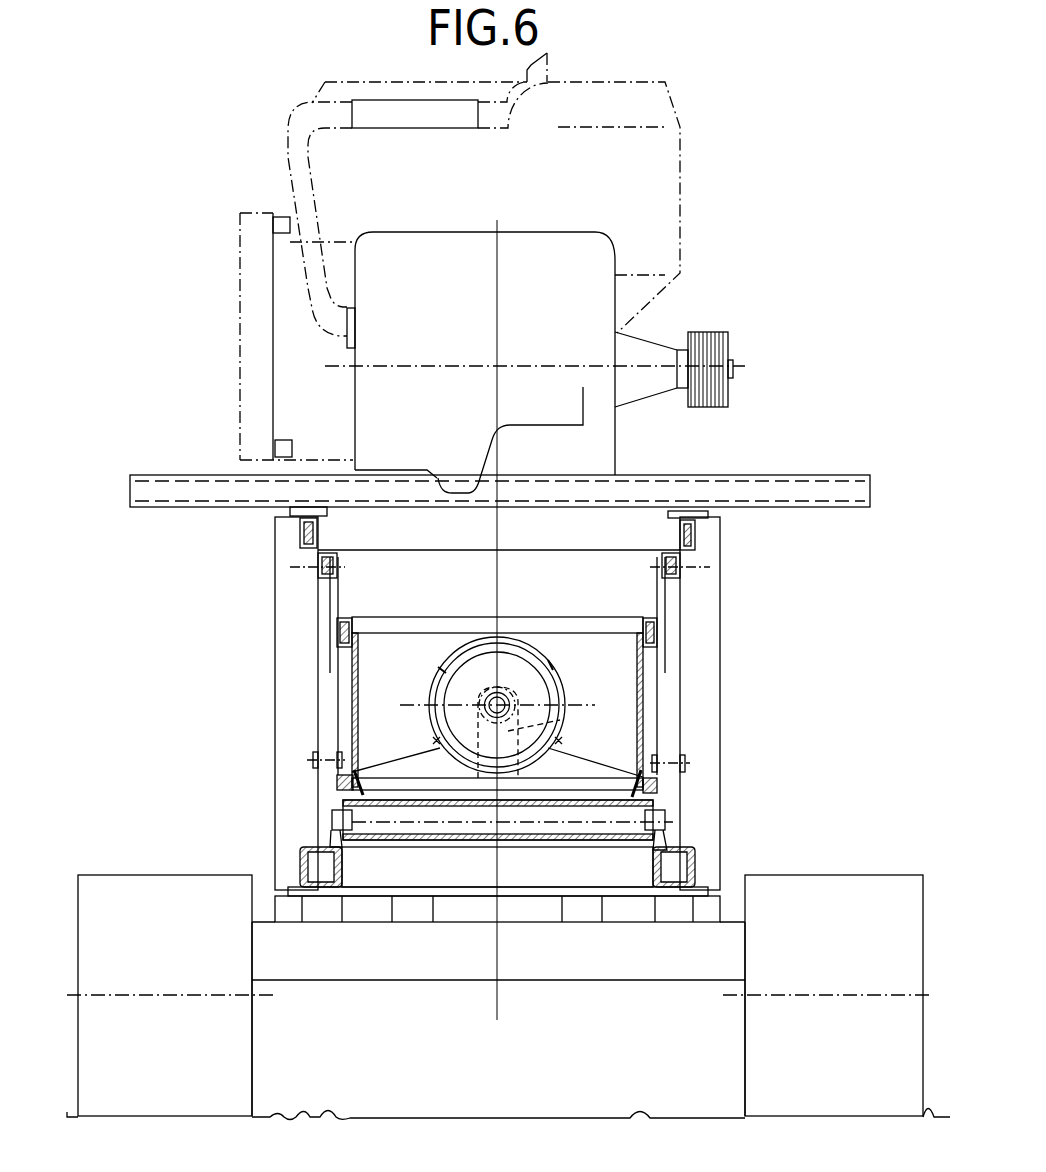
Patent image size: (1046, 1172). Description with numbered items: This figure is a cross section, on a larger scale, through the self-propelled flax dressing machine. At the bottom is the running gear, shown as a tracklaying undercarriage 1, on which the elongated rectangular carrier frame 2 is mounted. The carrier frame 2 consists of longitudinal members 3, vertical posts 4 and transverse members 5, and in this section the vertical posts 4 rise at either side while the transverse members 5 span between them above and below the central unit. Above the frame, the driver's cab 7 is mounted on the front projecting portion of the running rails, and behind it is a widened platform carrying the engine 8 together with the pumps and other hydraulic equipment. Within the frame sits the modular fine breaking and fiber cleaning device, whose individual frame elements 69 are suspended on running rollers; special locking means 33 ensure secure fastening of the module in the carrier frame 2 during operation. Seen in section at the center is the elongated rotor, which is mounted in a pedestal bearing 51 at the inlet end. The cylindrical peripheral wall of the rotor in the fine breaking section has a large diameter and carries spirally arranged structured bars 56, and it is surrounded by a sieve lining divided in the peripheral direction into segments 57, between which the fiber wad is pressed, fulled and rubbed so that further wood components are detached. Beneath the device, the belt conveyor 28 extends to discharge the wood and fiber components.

The tracklaying undercarriage 1 is at (318, 996).
The carrier frame 2 is at (188, 770).
The longitudinal member 3 is at (342, 872).
The vertical post 4 is at (288, 628).
The transverse member 5 is at (590, 547).
The driver's cab 7 is at (650, 190).
The engine 8 is at (540, 258).
The belt conveyor 28 is at (463, 816).
The locking means 33 is at (662, 757).
The pedestal bearing 51 is at (560, 720).
The structured bars 56 is at (441, 714).
The sieve lining segments 57 is at (444, 668).
The frame elements 69 is at (410, 622).